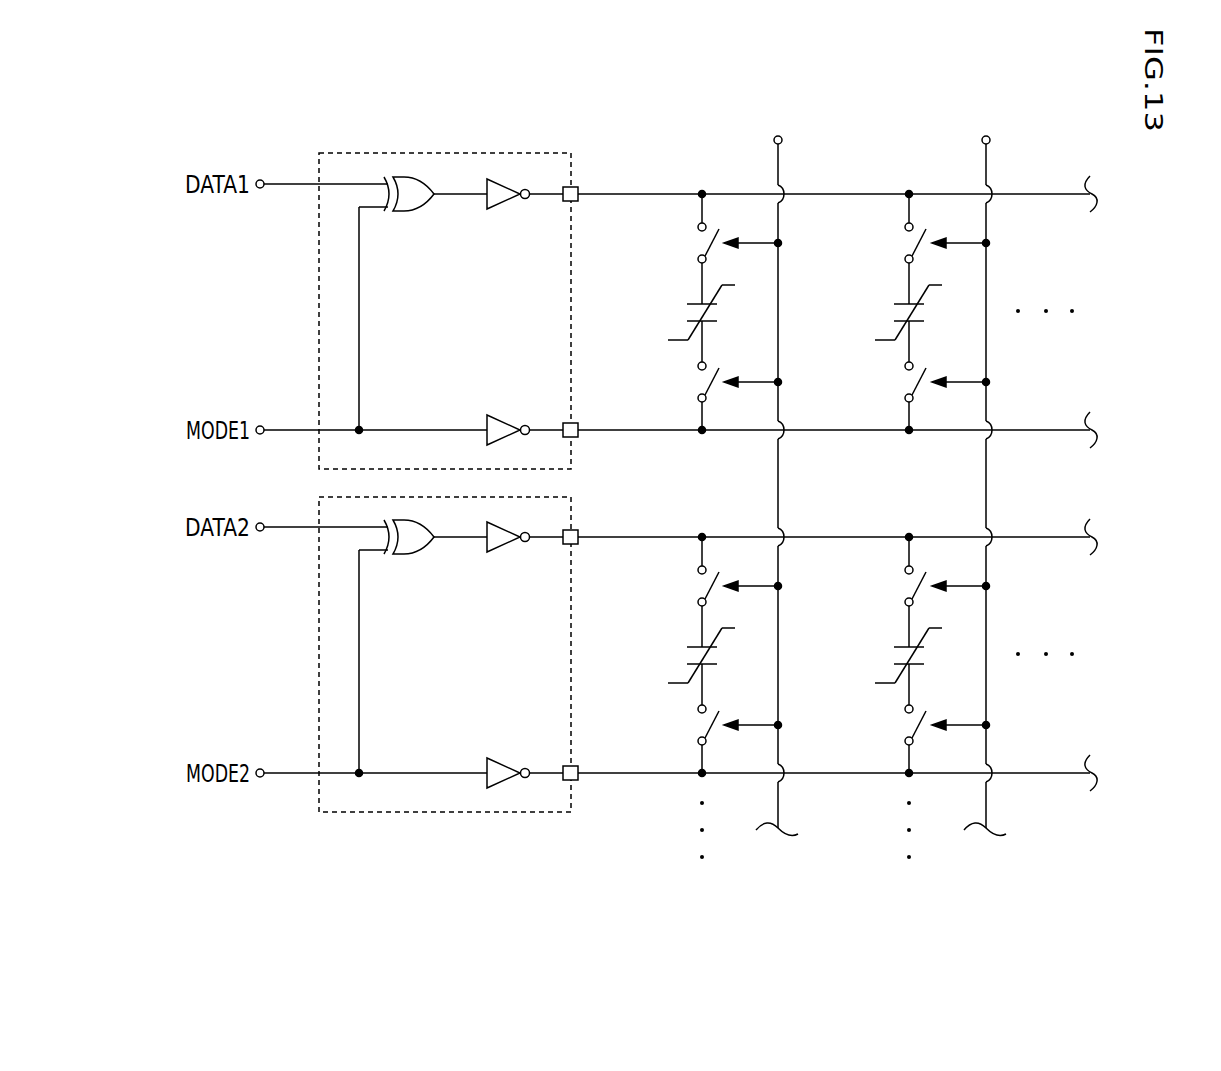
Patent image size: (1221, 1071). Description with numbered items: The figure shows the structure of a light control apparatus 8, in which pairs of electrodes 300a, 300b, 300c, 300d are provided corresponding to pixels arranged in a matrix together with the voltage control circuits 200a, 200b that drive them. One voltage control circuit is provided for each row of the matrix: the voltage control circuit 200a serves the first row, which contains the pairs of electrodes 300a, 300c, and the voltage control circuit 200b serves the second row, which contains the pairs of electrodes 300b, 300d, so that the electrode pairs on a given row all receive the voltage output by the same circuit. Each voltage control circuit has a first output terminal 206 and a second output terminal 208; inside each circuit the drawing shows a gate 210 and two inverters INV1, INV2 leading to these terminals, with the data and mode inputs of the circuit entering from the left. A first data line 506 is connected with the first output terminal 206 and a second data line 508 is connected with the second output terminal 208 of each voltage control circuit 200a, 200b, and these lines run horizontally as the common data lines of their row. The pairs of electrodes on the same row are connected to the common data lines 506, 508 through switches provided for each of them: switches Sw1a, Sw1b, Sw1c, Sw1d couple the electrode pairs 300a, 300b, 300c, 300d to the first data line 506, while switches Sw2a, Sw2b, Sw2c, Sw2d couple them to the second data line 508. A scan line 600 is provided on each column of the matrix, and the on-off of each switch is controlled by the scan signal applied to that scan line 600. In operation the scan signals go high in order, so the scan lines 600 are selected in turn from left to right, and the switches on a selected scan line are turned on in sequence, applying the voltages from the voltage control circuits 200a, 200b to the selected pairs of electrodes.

The light control apparatus 8 is at (634, 902).
The voltage control circuit 200a is at (404, 311).
The voltage control circuit 200b is at (404, 654).
The first output terminal 206 is at (573, 437).
The second output terminal 208 is at (571, 186).
The exclusive OR gate 210 is at (414, 212).
The first inverter INV1 is at (506, 421).
The second inverter INV2 is at (508, 206).
The pair of electrodes 300a is at (687, 312).
The pair of electrodes 300b is at (687, 655).
The pair of electrodes 300c is at (894, 312).
The pair of electrodes 300d is at (894, 655).
The switch SW1 Sw1a is at (695, 382).
The switch SW1 Sw1b is at (695, 725).
The switch SW1 Sw1c is at (903, 382).
The switch SW1 Sw1d is at (903, 725).
The switch SW2 Sw2a is at (695, 243).
The switch SW2 Sw2b is at (695, 586).
The switch SW2 Sw2c is at (903, 243).
The switch SW2 Sw2d is at (903, 586).
The first data line 506 is at (1038, 433).
The second data line 508 is at (1038, 197).
The scan line 600 is at (781, 173).